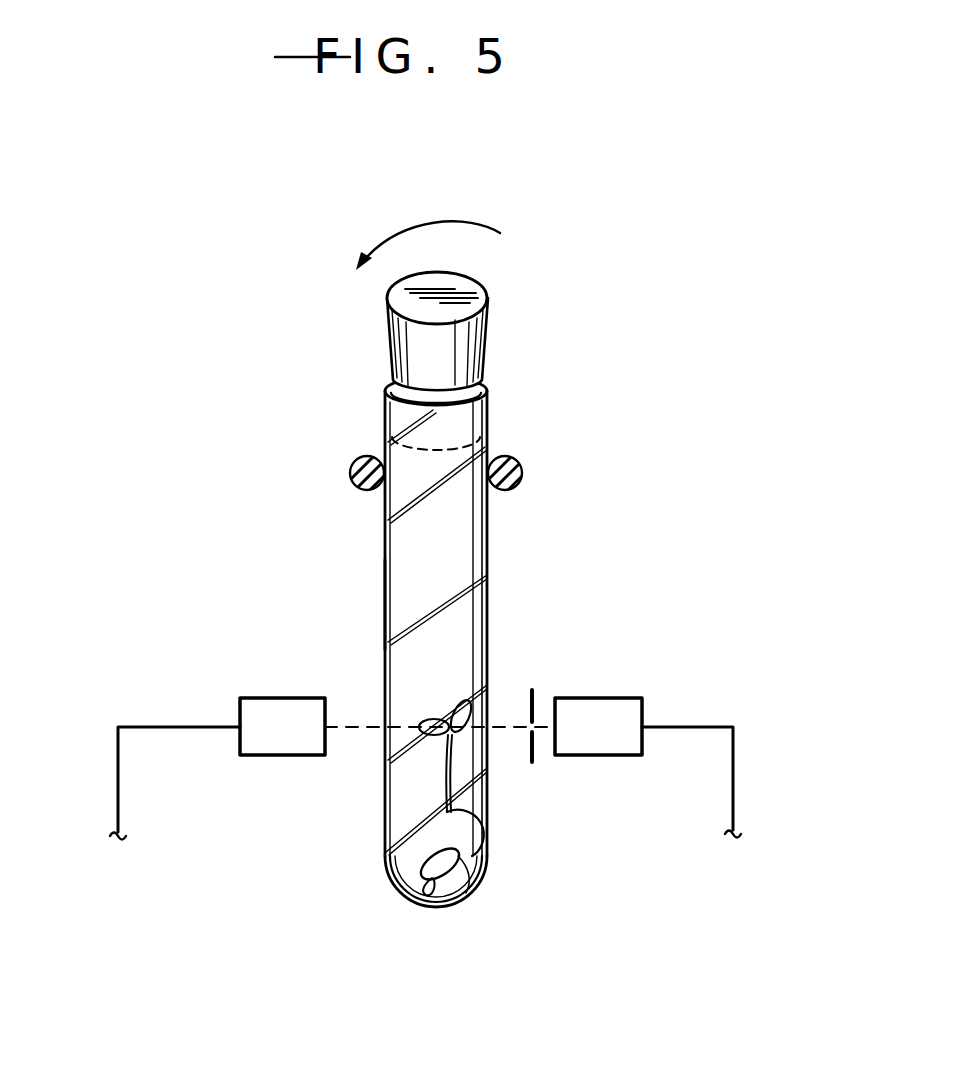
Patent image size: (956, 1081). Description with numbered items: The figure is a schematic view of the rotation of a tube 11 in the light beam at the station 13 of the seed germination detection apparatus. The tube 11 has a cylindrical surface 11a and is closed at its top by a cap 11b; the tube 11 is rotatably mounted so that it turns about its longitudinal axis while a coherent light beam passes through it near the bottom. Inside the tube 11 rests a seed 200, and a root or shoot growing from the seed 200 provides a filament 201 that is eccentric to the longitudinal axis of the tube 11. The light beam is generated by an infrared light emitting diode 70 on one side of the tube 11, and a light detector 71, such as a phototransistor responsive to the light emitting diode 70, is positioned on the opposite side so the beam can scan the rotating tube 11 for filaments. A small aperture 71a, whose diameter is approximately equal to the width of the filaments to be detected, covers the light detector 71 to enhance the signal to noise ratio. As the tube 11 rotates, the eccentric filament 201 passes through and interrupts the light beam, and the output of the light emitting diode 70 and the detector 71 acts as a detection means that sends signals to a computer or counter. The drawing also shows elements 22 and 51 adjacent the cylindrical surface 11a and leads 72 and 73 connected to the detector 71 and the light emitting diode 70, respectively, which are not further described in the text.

The tube 11 is at (488, 580).
The cylindrical surface 11a is at (372, 605).
The cap 11b is at (486, 329).
The station 13 is at (502, 672).
The support roller 22 is at (358, 457).
The drive roller 51 is at (519, 462).
The infrared light emitting diode 70 is at (240, 701).
The light detector 71 is at (643, 700).
The aperture 71a is at (534, 690).
The detector lead wire 72 is at (733, 765).
The light source lead wire 73 is at (118, 755).
The seed 200 is at (468, 873).
The filament 201 is at (487, 827).